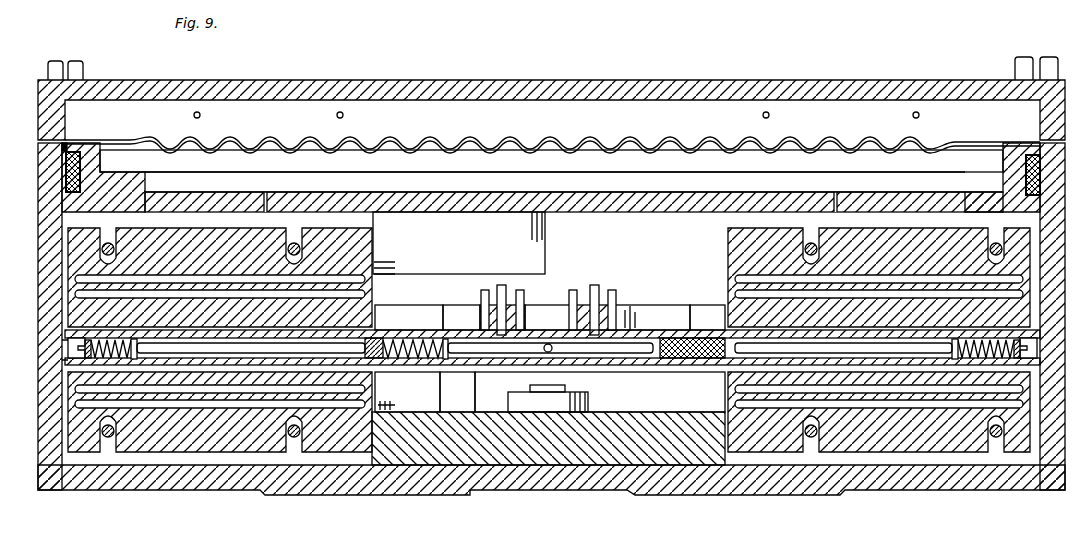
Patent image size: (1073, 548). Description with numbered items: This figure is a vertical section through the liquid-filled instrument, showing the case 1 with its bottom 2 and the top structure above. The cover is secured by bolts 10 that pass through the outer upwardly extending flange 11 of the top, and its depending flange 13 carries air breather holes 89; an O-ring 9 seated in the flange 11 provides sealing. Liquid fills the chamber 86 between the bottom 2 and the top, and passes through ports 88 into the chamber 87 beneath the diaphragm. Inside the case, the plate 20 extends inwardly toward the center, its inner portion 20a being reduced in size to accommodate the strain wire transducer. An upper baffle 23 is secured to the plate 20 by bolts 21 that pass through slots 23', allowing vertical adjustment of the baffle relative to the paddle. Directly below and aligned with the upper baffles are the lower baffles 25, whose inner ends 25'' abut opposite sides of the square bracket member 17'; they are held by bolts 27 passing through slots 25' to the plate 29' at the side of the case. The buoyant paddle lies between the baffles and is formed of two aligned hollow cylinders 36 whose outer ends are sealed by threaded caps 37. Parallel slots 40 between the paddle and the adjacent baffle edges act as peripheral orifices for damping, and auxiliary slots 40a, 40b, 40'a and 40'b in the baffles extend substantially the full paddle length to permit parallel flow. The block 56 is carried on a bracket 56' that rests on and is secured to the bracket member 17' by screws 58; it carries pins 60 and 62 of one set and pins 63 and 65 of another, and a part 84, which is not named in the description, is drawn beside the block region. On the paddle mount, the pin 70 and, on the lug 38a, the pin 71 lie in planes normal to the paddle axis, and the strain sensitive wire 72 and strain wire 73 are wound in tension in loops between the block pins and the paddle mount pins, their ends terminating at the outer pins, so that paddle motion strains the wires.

The case 1 is at (52, 307).
The bottom 2 is at (82, 476).
The O-ring 9 is at (66, 178).
The bolts 10 is at (85, 74).
The upwardly extending flange 11 is at (62, 148).
The depending flange 13 is at (46, 114).
The bracket member 17' is at (548, 459).
The plate 20 is at (225, 216).
The inner portion of plate 20a is at (537, 218).
The bolts 21 is at (286, 244).
The baffle 23 is at (419, 277).
The slots 23' is at (519, 269).
The lower baffles 25 is at (457, 392).
The slots 25' is at (549, 438).
The inner ends of baffles 25'' is at (407, 392).
The bolts 27 is at (102, 430).
The plate 29' is at (870, 492).
The hollow cylinders 36 is at (186, 348).
The threaded caps 37 is at (66, 345).
The lug 38a is at (647, 318).
The slots 40 is at (523, 337).
The slot 40a is at (392, 268).
The slot 40b is at (404, 403).
The slot 40'a is at (740, 257).
The slot 40'b is at (843, 347).
The block 56 is at (534, 303).
The bracket 56' is at (600, 392).
The screws 58 is at (560, 390).
The pin 60 is at (484, 300).
The pin 62 is at (487, 292).
The pin 63 is at (574, 292).
The pin 65 is at (616, 294).
The pin 70 is at (482, 322).
The pin 71 is at (612, 266).
The strain sensitive wire 72 is at (501, 286).
The strain wire 73 is at (600, 288).
The spacer 84 is at (408, 318).
The chamber 86 is at (678, 246).
The chamber 87 is at (583, 168).
The ports 88 is at (266, 195).
The air breather holes 89 is at (202, 115).